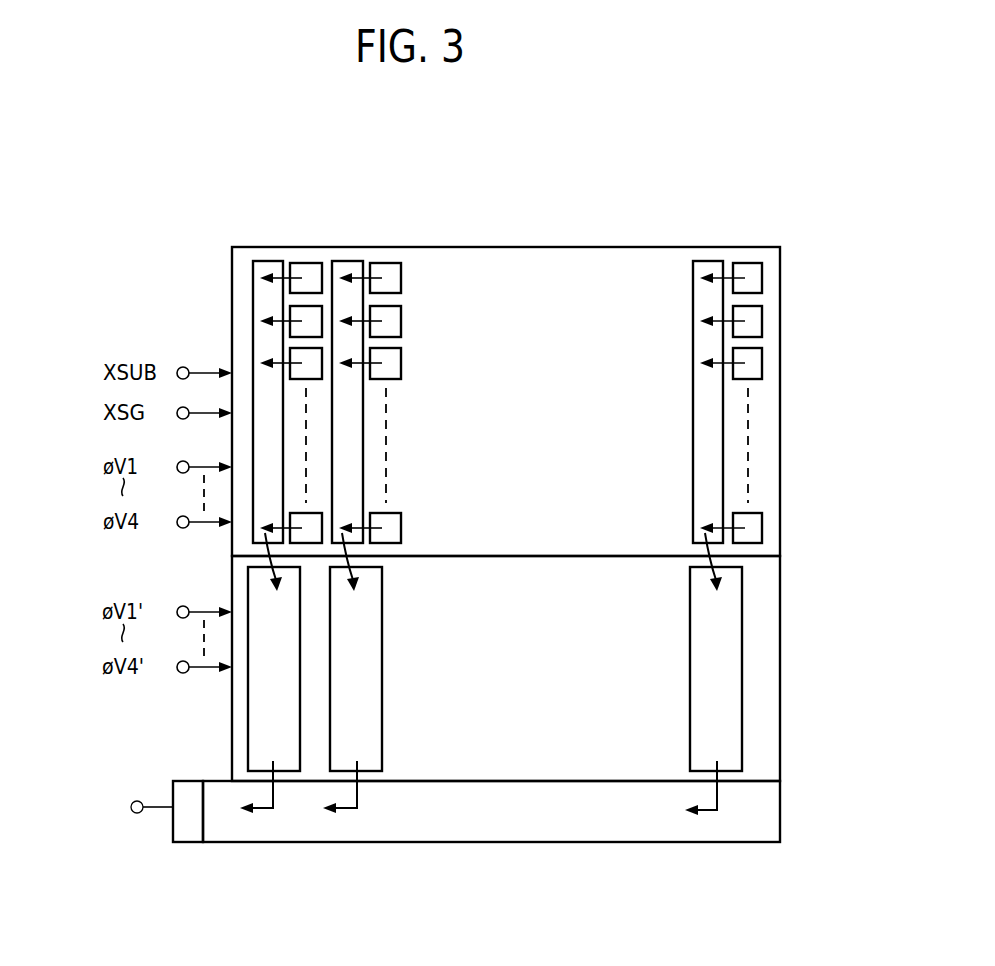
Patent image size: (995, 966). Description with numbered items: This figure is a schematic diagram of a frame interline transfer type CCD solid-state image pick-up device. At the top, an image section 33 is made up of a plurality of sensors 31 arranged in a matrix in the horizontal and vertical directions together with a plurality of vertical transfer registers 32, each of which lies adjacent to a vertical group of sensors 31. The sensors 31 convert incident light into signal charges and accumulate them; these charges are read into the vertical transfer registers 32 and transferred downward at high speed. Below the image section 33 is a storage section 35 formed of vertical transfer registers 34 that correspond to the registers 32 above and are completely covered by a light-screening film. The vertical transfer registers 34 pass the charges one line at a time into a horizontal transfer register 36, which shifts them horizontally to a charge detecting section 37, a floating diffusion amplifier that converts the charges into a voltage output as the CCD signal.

The sensor 31 is at (308, 272).
The vertical transfer register 32 is at (693, 297).
The image section 33 is at (450, 423).
The vertical transfer register 34 is at (366, 583).
The storage section 35 is at (450, 682).
The horizontal transfer register 36 is at (762, 826).
The charge detecting section 37 is at (193, 785).